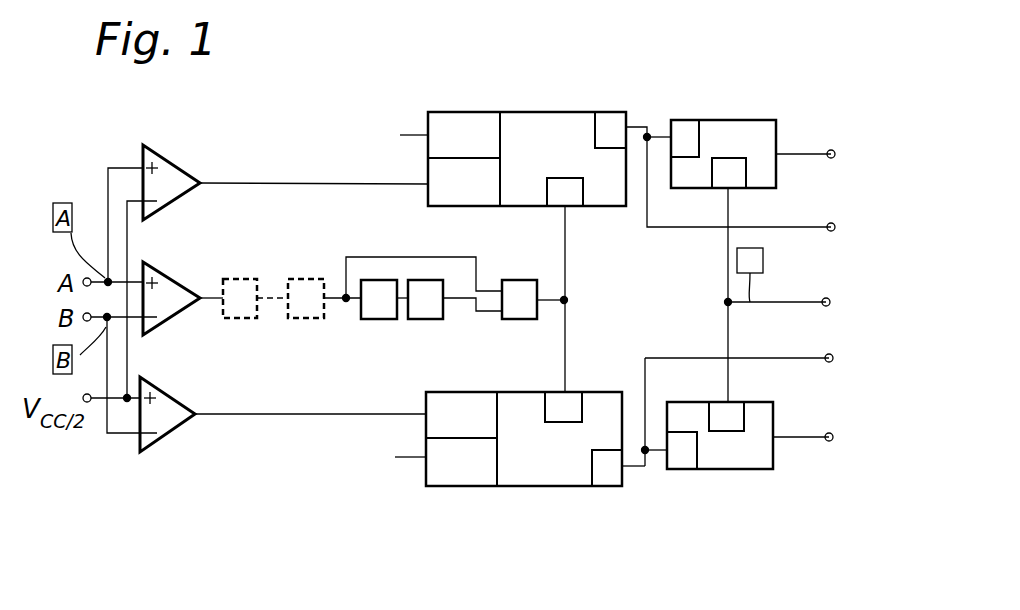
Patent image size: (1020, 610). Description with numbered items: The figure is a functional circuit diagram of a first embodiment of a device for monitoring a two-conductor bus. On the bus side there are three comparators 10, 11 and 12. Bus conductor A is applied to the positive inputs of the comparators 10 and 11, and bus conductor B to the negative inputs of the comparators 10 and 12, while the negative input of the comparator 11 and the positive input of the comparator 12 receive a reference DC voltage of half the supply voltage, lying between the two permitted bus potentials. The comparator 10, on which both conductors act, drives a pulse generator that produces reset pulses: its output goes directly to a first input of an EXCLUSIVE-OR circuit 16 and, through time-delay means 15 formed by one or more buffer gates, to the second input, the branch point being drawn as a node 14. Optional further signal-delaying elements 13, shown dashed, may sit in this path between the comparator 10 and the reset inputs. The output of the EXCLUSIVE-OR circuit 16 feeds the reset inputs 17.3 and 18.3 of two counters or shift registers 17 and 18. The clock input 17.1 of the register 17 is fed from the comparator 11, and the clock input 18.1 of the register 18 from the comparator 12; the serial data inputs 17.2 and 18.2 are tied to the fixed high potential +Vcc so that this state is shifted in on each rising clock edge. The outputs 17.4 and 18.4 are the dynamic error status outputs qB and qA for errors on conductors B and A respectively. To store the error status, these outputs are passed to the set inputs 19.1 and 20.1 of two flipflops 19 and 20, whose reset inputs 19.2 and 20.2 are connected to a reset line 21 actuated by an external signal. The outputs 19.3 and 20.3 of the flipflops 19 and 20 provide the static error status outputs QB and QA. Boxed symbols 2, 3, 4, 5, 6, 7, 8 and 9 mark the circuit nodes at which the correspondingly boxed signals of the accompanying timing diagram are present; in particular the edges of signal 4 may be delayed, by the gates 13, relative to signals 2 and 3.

The comparator 10 is at (183, 292).
The comparator 11 is at (183, 177).
The comparator 12 is at (178, 425).
The signal-delaying element 13 is at (292, 320).
The node 14 is at (344, 305).
The time-delay means 15 is at (428, 319).
The EXCLUSIVE-OR circuit 16 is at (515, 319).
The counter or shift register 17 is at (530, 128).
The clock input 17.1 is at (428, 192).
The serial data input 17.2 is at (460, 112).
The reset input 17.3 is at (578, 208).
The output 17.4 is at (608, 112).
The counter or shift register 18 is at (528, 468).
The clock input 18.1 is at (475, 402).
The serial data input 18.2 is at (455, 486).
The reset input 18.3 is at (575, 400).
The output 18.4 is at (603, 486).
The flipflop 19 is at (745, 120).
The set input 19.1 is at (683, 120).
The reset input 19.2 is at (740, 178).
The output 19.3 is at (822, 150).
The flipflop 20 is at (752, 468).
The set input 20.1 is at (688, 470).
The reset input 20.2 is at (740, 405).
The output 20.3 is at (850, 418).
The reset line 21 is at (772, 302).
The boxed signal symbol 2 is at (297, 183).
The boxed signal symbol 3 is at (293, 414).
The boxed signal symbol 4 is at (346, 298).
The signal line 5 is at (564, 300).
The signal line 6 is at (655, 137).
The signal line 7 is at (800, 154).
The signal line 8 is at (652, 466).
The signal line 9 is at (802, 437).